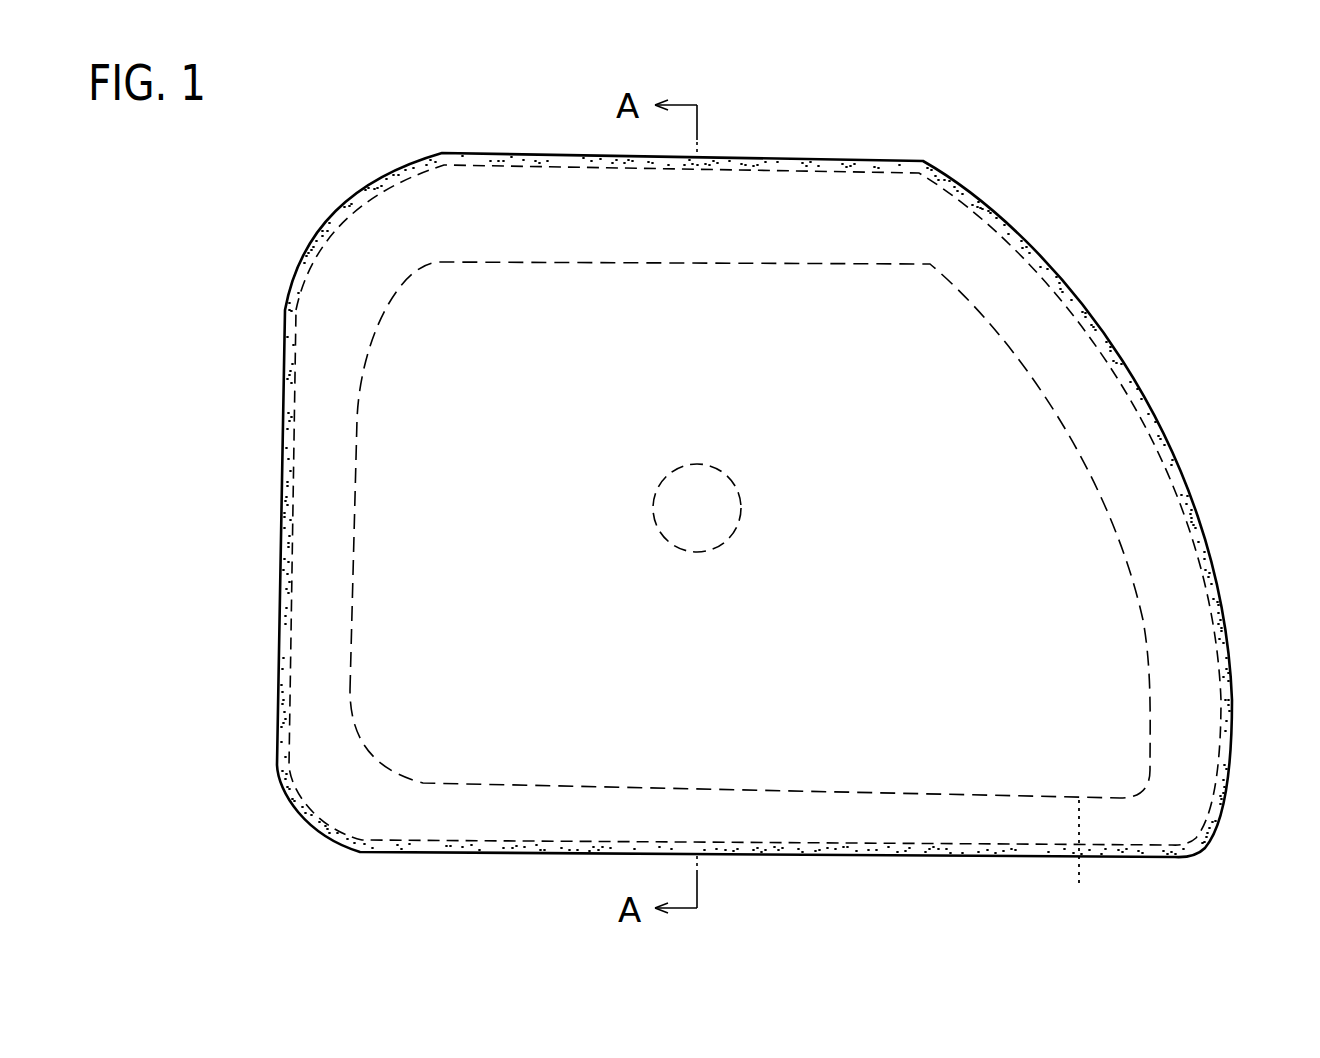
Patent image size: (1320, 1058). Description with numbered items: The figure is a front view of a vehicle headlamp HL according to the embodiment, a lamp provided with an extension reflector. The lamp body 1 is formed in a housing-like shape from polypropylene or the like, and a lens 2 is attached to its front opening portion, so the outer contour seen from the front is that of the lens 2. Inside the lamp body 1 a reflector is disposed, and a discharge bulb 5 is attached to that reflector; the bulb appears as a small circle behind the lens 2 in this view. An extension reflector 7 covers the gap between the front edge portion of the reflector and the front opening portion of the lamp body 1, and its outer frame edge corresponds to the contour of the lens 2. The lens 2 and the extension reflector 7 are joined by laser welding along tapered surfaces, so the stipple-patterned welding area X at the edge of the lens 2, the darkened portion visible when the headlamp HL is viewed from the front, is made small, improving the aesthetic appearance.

The lamp body 1 is at (1104, 330).
The lens 2 is at (455, 753).
The discharge bulb 5 is at (707, 463).
The extension reflector 7 is at (1077, 868).
The headlamp HL is at (975, 188).
The welding area X is at (1213, 580).